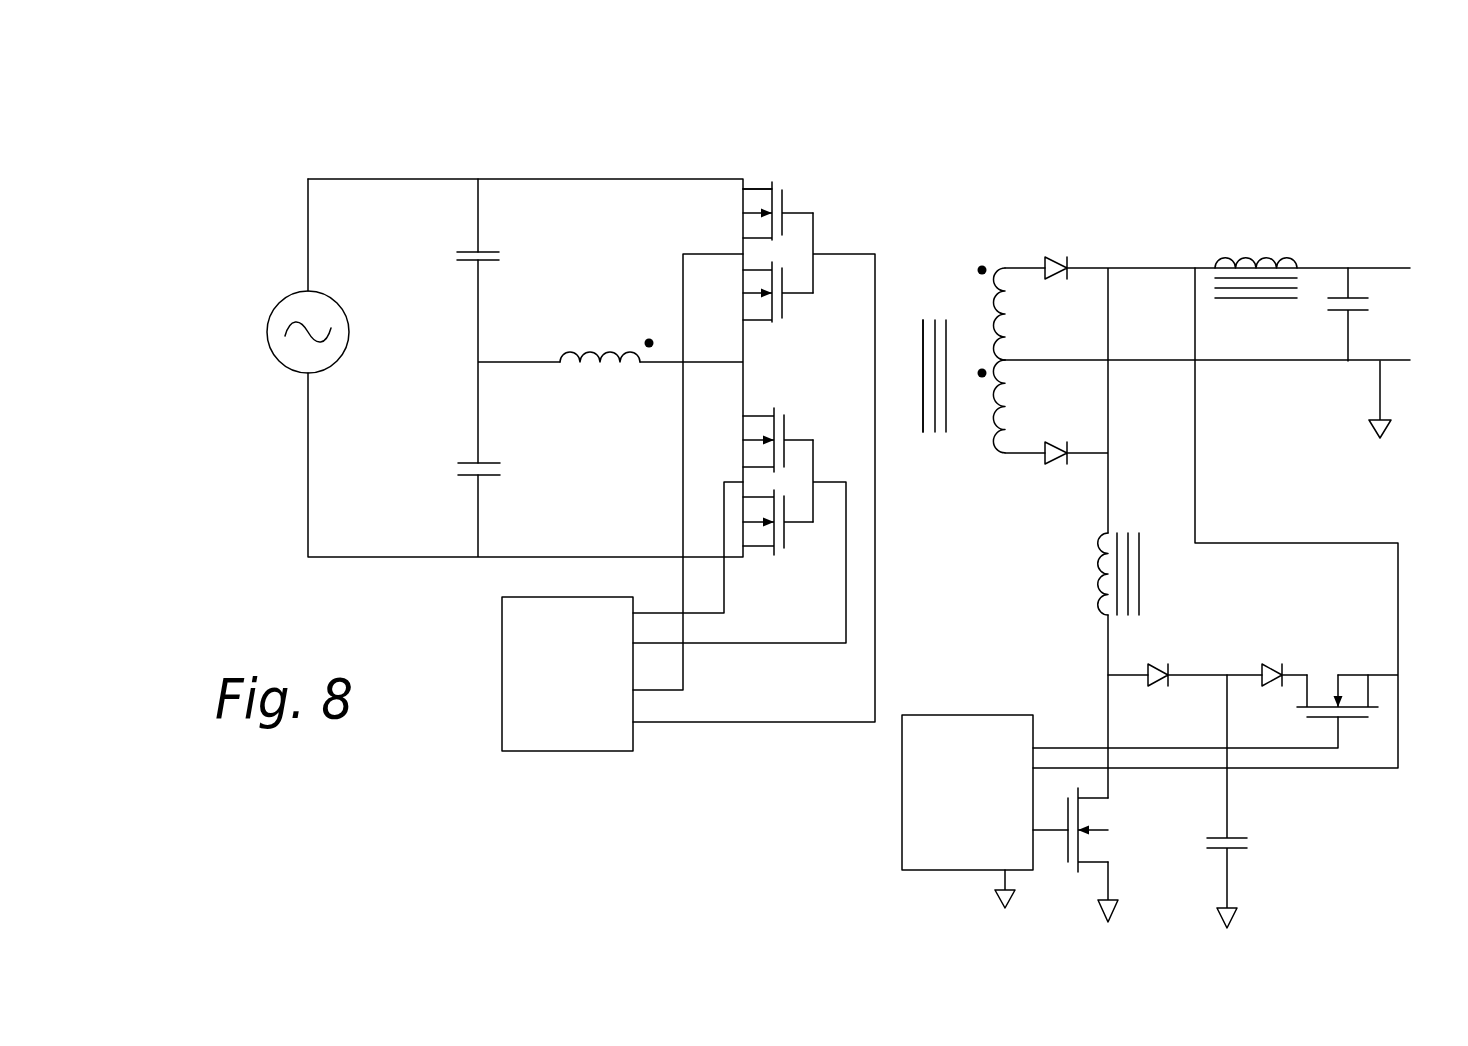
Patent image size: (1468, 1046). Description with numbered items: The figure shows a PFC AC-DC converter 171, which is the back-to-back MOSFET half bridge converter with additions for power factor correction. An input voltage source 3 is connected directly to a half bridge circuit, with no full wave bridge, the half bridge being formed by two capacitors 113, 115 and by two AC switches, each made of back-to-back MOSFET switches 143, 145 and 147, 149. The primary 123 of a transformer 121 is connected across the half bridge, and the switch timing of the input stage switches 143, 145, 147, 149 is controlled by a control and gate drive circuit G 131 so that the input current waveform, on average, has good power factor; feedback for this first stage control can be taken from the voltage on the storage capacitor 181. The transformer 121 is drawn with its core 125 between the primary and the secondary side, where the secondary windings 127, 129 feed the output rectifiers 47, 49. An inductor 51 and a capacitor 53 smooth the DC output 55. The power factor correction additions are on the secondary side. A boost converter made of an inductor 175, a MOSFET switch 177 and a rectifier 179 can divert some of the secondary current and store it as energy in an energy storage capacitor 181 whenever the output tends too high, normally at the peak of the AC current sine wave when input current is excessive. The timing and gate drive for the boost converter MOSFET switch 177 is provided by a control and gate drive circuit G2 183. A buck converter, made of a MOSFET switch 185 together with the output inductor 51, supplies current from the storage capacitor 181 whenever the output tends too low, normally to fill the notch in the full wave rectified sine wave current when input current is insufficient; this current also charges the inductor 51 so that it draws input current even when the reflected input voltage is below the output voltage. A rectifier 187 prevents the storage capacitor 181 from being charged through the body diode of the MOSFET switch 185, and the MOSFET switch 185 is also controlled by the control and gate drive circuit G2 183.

The PFC AC-DC converter 171 is at (276, 178).
The input voltage source 3 is at (260, 318).
The capacitor 113 is at (508, 273).
The capacitor 115 is at (513, 473).
The primary 123 is at (570, 325).
The MOSFET switch 143 is at (725, 220).
The MOSFET switch 145 is at (725, 282).
The MOSFET switch 147 is at (738, 438).
The MOSFET switch 149 is at (732, 530).
The control and gate drive circuit G 131 is at (467, 675).
The transformer 121 is at (917, 213).
The transformer core 125 is at (930, 307).
The secondary winding 127 is at (985, 303).
The secondary winding 129 is at (987, 412).
The output rectifier 49 is at (1048, 257).
The output rectifier 47 is at (1052, 467).
The inductor 51 is at (1230, 252).
The capacitor 53 is at (1327, 323).
The DC output 55 is at (1467, 290).
The inductor 175 is at (1085, 620).
The rectifier 179 is at (1158, 658).
The rectifier 187 is at (1253, 652).
The MOSFET switch 185 is at (1330, 672).
The energy storage capacitor 181 is at (1253, 833).
The MOSFET switch 177 is at (1118, 842).
The control and gate drive circuit G2 183 is at (880, 782).